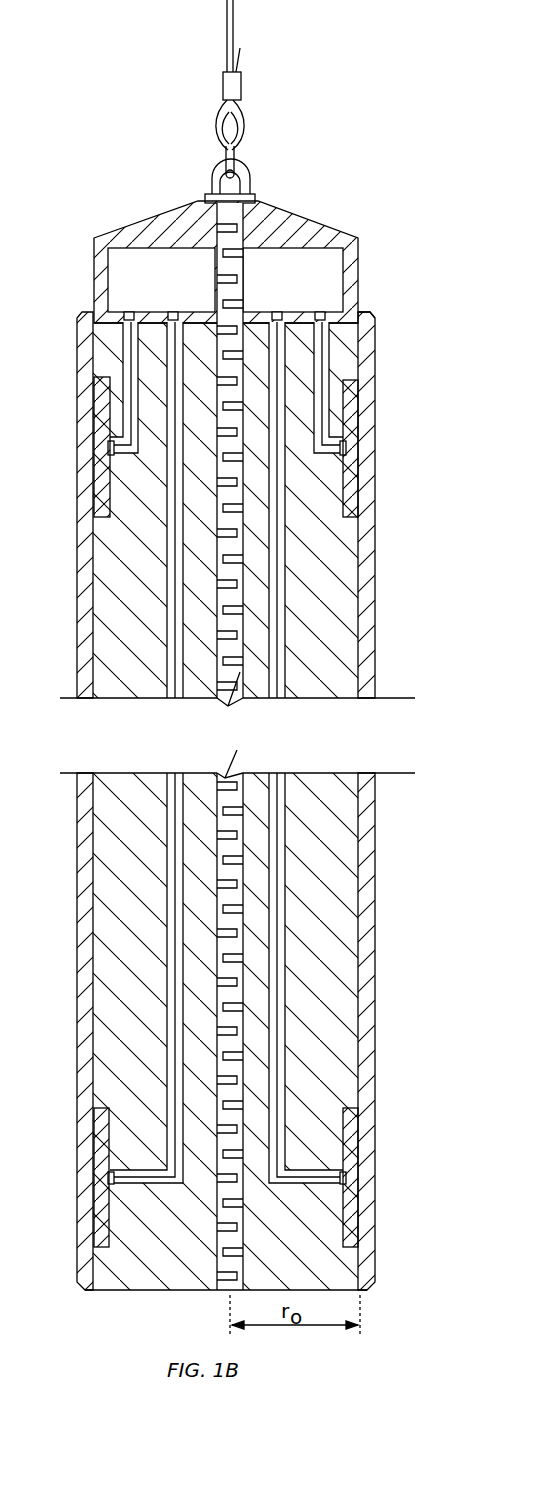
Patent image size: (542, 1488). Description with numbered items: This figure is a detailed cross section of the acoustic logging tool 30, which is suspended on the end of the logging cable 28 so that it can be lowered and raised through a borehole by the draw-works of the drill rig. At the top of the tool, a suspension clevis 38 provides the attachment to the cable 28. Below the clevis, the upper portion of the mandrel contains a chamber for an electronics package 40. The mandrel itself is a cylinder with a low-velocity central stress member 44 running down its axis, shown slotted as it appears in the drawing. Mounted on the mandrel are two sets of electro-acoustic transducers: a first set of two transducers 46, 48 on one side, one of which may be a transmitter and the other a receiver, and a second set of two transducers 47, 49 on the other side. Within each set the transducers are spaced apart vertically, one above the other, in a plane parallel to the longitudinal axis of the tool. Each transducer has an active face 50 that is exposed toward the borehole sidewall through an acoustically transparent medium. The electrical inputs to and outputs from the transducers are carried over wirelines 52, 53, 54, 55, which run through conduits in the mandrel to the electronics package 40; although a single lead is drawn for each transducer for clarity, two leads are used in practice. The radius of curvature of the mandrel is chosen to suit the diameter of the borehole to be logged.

The logging cable 28 is at (236, 12).
The logging tool 30 is at (365, 174).
The suspension clevis 38 is at (250, 176).
The electronics package 40 is at (333, 270).
The central stress member 44 is at (225, 1292).
The electro-acoustic transducer 46 is at (350, 412).
The transducer 47 is at (100, 393).
The electro-acoustic transducer 48 is at (352, 1128).
The transducer 49 is at (100, 1130).
The active face 50 is at (95, 445).
The wireline 52 is at (100, 320).
The wireline 53 is at (170, 314).
The wireline 54 is at (292, 314).
The wireline 55 is at (362, 318).